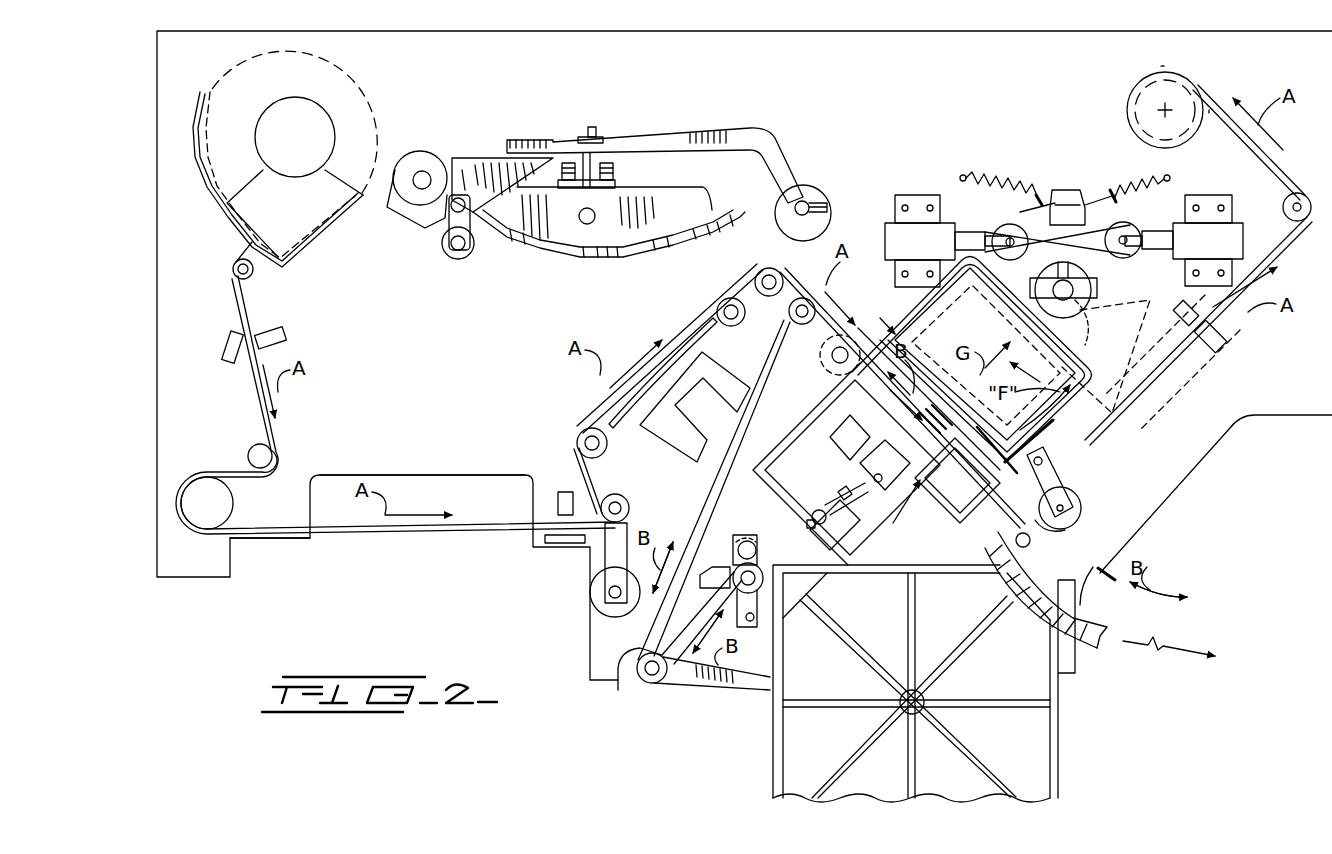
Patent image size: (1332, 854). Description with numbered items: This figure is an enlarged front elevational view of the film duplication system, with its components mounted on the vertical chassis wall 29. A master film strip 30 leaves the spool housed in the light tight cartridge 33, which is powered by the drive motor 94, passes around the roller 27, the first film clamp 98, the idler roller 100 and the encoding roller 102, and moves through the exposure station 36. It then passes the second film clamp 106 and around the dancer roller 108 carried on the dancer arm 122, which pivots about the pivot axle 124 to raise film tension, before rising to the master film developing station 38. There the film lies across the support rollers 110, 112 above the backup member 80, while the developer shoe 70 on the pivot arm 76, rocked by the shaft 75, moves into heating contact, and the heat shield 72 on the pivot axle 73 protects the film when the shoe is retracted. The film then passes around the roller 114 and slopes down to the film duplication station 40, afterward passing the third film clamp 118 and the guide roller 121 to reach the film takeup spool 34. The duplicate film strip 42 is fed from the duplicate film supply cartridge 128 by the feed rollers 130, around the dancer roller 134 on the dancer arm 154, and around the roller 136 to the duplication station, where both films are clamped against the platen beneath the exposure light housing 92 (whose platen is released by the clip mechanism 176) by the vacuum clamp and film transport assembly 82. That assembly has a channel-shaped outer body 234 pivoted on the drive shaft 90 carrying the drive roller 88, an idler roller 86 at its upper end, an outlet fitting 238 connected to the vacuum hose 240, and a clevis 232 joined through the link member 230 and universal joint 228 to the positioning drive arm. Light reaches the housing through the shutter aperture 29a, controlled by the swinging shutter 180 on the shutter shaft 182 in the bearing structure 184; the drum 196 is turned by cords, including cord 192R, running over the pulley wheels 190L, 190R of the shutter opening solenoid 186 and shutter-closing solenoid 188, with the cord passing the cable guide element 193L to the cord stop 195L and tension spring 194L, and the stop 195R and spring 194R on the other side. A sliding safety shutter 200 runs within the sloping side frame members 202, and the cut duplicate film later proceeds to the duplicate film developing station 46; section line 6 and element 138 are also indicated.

The light tight cartridge 33 is at (345, 58).
The drive motor 94 is at (323, 118).
The roller 27 is at (253, 271).
The first film clamp 98 is at (282, 330).
The idler roller 100 is at (250, 450).
The encoding roller 102 is at (232, 502).
The exposure station 36 is at (415, 458).
The master film strip 30 is at (262, 540).
The second film clamp 106 is at (565, 492).
The pivot axle 73 is at (420, 178).
The pivot arm 76 is at (640, 140).
The developer shoe 70 is at (655, 190).
The heat shield 72 is at (600, 265).
The shaft 75 is at (788, 232).
The master film developing station 38 is at (555, 402).
The support roller 110 is at (604, 450).
The dancer roller 108 is at (630, 510).
The support roller 112 is at (743, 322).
The roller 114 is at (778, 272).
The roller 136 is at (792, 312).
The backup member 80 is at (700, 335).
The exposure light housing 92 is at (880, 320).
The idler roller 86 is at (818, 380).
The side frame members 202 is at (805, 430).
The safety shutter 200 is at (851, 437).
The clevis 232 is at (885, 465).
The universal joint 228 is at (812, 510).
The link member 230 is at (845, 500).
The vacuum clamp and film transport assembly 82 is at (891, 511).
The outer body 234 is at (931, 428).
The outlet fitting 238 is at (998, 450).
The clip mechanism 176 is at (985, 500).
The section line 6 is at (778, 520).
The film duplication station 40 is at (972, 168).
The shutter aperture 29a is at (1049, 441).
The shutter opening solenoid 186 is at (947, 241).
The shutter-closing solenoid 188 is at (1184, 240).
The pulley wheel 190L is at (1010, 214).
The pulley wheel 190R is at (1128, 232).
The cord 192R is at (1112, 194).
The cable guide element 193L is at (1040, 195).
The tension spring 194L is at (975, 178).
The cord stop 195L is at (1038, 195).
The stop 195R is at (1120, 190).
The spring 194R is at (1150, 178).
The shutter shaft 182 is at (1090, 276).
The bearing structure 184 is at (1070, 298).
The drum 196 is at (1068, 330).
The film takeup spool 34 is at (1126, 122).
The duplicate film developing station 46 is at (1125, 105).
The guide roller 121 is at (1302, 215).
The chassis wall 29 is at (1175, 492).
The third film clamp 118 is at (1222, 340).
The swinging shutter 180 is at (1200, 363).
The roller 138 is at (1082, 500).
The drive shaft 90 is at (1040, 538).
The drive roller 88 is at (1040, 550).
The duplicate film strip 42 is at (1105, 562).
The vacuum hose 240 is at (1100, 650).
The duplicate film supply cartridge 128 is at (1065, 712).
The dancer arm 122 is at (600, 560).
The pivot axle 124 is at (608, 594).
The feed rollers 130 is at (735, 548).
The dancer roller 134 is at (653, 682).
The dancer arm 154 is at (740, 688).